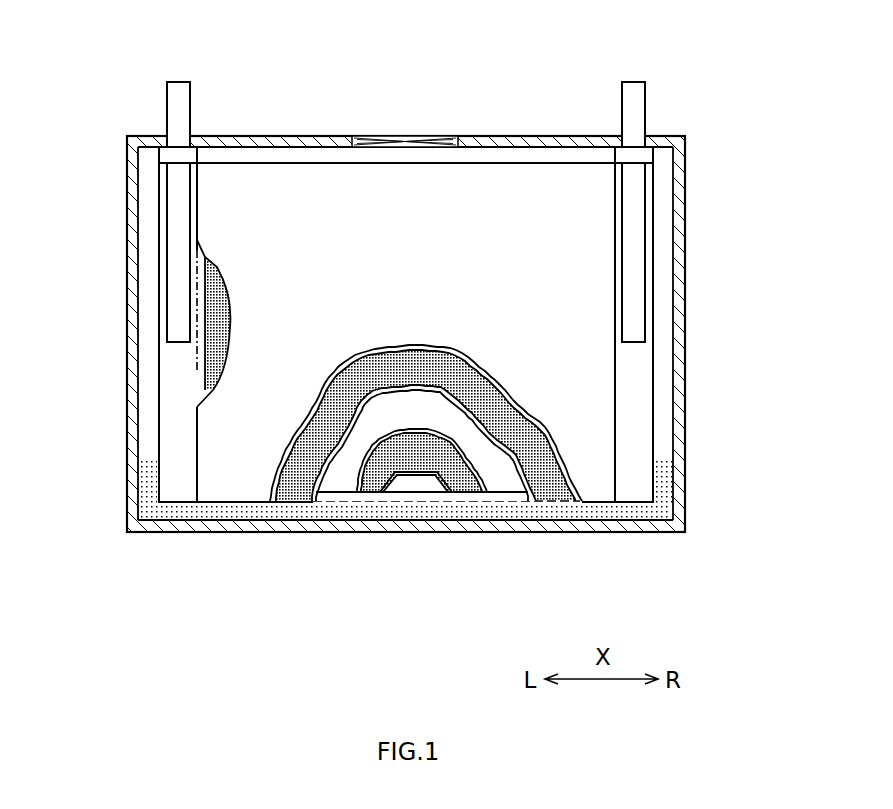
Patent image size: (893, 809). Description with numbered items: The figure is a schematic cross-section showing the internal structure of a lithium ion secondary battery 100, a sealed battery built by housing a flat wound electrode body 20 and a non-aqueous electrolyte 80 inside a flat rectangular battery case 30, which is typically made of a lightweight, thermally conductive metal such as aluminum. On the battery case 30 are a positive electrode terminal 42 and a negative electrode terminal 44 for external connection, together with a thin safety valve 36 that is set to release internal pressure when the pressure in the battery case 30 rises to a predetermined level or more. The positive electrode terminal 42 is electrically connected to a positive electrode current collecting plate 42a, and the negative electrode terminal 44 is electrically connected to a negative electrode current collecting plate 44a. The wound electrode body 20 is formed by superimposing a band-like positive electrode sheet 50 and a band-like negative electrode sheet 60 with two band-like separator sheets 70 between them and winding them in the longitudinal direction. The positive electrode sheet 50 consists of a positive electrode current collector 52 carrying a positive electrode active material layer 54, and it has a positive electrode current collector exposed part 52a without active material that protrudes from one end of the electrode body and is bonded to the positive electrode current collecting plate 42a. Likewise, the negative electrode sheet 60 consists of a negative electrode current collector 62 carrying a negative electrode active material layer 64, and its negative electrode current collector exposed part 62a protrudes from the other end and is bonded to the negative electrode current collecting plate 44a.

The lithium ion secondary battery 100 is at (409, 329).
The wound electrode body 20 is at (382, 360).
The battery case 30 is at (696, 252).
The safety valve 36 is at (405, 136).
The positive electrode terminal 42 is at (176, 82).
The positive electrode current collecting plate 42a is at (180, 230).
The negative electrode terminal 44 is at (630, 82).
The negative electrode current collecting plate 44a is at (633, 197).
The positive electrode sheet 50 is at (293, 485).
The positive electrode current collector 52 is at (153, 398).
The positive electrode current collector exposed part 52a is at (173, 477).
The positive electrode active material layer 54 is at (218, 297).
The negative electrode sheet 60 is at (370, 483).
The negative electrode current collector 62 is at (653, 357).
The negative electrode current collector exposed part 62a is at (640, 400).
The negative electrode active material layer 64 is at (415, 540).
The separator sheet 70 is at (233, 432).
The non-aqueous electrolyte 80 is at (594, 510).